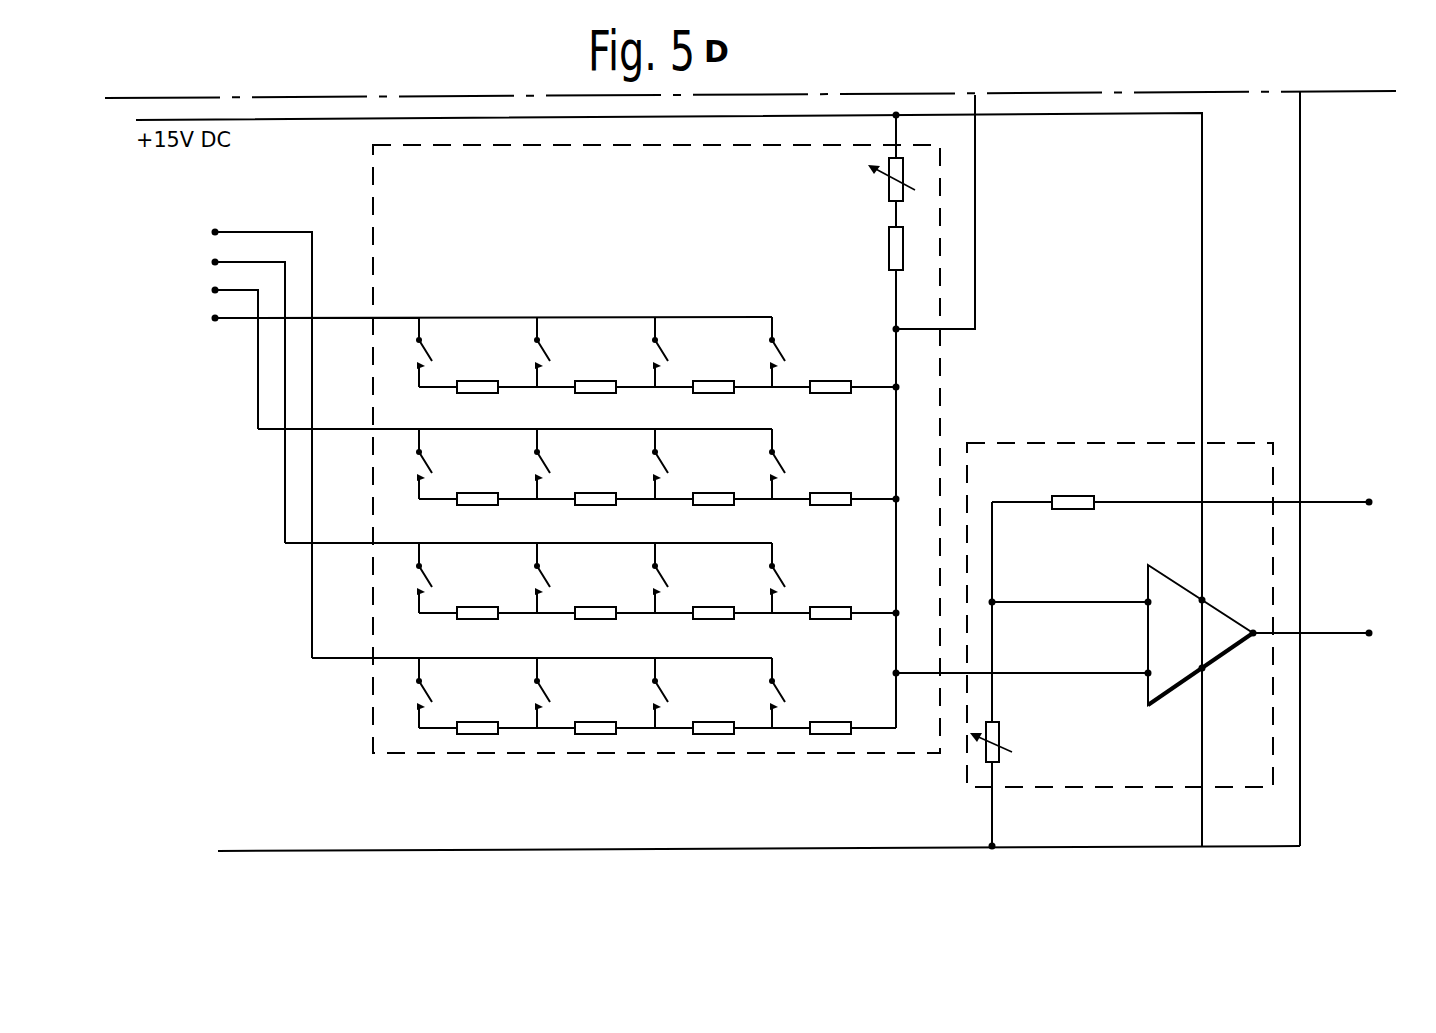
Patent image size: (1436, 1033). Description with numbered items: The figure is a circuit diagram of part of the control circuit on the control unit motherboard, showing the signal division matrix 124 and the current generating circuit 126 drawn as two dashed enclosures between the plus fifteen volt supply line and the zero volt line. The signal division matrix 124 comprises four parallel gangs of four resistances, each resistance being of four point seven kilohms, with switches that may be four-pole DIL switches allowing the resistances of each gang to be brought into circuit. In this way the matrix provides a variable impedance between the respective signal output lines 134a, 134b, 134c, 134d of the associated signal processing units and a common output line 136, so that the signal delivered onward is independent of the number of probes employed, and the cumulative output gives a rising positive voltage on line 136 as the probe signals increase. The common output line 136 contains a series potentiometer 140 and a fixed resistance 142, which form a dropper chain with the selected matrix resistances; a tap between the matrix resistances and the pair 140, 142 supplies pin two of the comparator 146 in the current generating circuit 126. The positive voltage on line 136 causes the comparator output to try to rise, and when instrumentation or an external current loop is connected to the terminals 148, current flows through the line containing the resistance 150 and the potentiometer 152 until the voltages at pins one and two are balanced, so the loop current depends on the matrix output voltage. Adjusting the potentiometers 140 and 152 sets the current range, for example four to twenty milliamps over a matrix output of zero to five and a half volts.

The signal division matrix 124 is at (373, 712).
The current generating circuit 126 is at (1112, 443).
The signal output line 134a is at (215, 318).
The signal output line 134b is at (215, 290).
The signal output line 134c is at (215, 262).
The signal output line 134d is at (215, 232).
The common output line 136 is at (898, 412).
The series potentiometer 140 is at (905, 176).
The fixed resistance 142 is at (900, 241).
The comparator 146 is at (1163, 690).
The terminals 148 is at (1380, 605).
The resistance 150 is at (1072, 505).
The potentiometer 152 is at (985, 760).